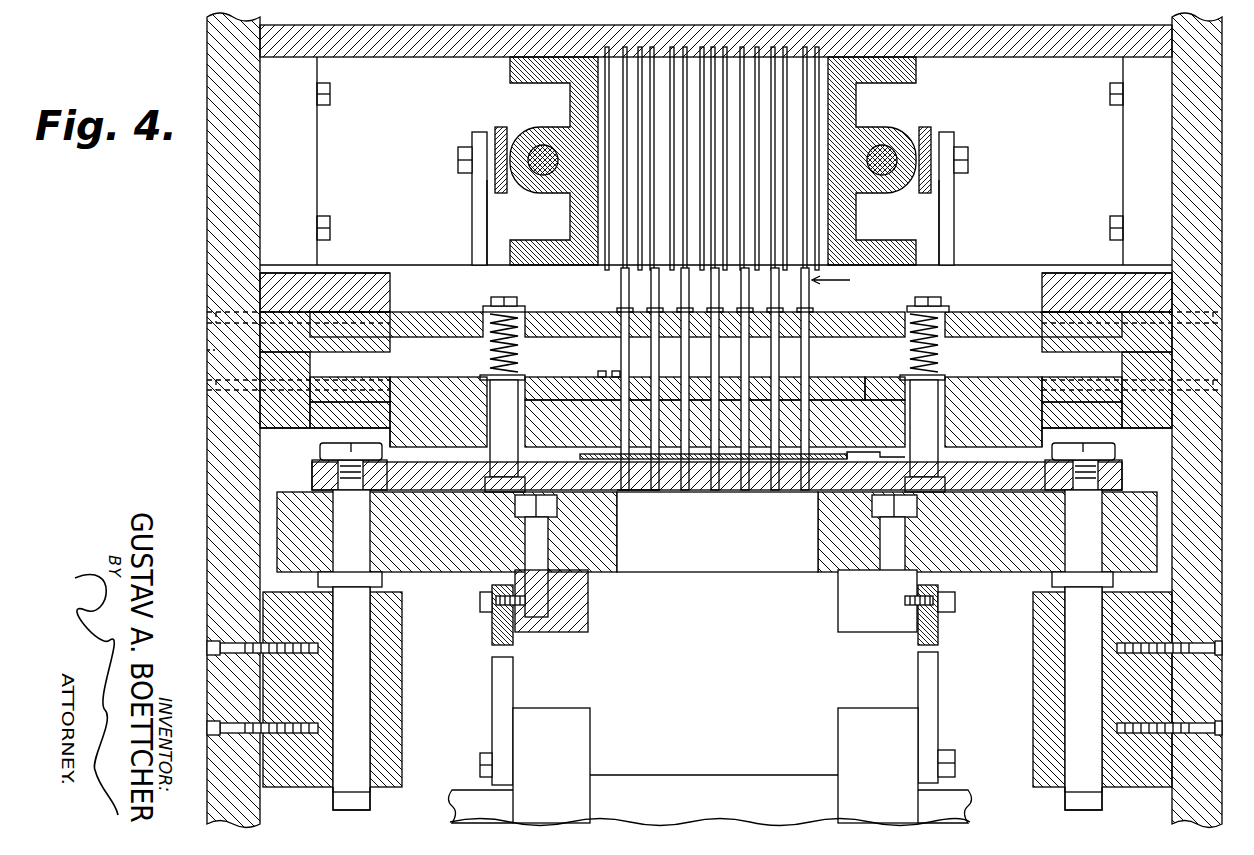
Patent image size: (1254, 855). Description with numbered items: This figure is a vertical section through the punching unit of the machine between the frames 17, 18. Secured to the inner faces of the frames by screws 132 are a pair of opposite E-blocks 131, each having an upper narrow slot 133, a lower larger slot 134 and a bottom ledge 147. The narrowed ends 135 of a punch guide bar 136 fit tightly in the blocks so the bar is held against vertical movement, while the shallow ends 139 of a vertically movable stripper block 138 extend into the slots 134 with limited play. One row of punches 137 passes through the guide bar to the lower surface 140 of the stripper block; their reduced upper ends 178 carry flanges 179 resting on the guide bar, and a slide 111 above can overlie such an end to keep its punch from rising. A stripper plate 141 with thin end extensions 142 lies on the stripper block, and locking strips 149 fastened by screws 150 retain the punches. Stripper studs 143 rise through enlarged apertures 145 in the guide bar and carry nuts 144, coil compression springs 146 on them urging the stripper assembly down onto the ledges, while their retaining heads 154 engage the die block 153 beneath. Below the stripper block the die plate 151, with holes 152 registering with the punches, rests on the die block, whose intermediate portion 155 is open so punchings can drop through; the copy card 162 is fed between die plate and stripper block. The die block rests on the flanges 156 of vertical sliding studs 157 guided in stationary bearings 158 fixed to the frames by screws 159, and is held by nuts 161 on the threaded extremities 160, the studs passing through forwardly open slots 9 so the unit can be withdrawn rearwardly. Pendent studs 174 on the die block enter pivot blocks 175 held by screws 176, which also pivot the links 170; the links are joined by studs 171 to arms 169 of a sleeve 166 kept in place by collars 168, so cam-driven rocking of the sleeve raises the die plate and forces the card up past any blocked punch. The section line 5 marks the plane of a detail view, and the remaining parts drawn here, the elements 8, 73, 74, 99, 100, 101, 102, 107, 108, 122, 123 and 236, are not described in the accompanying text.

The section line 5- 5 is at (808, 398).
The bolt 8 is at (458, 158).
The forwardly open slot 9 is at (360, 490).
The frame 17 is at (1172, 128).
The frame 18 is at (207, 262).
The pivot pin 73 is at (884, 147).
The pivot pin 74 is at (540, 178).
The partition wall 99 is at (1123, 160).
The partition wall 100 is at (318, 160).
The top plate 101 is at (410, 58).
The chamber 102 is at (420, 265).
The bearing block 107 is at (916, 77).
The bearing block 108 is at (510, 75).
The slide 111 is at (712, 169).
The plate 122 is at (472, 200).
The liner plate 123 is at (500, 127).
The E-block 131 is at (345, 273).
The screw 132 is at (207, 318).
The upper narrow side slot 133 is at (190, 355).
The lower vertically larger slot 134 is at (310, 357).
The narrowed end 135 is at (312, 310).
The punch guide bar 136 is at (442, 312).
The punch 137 is at (800, 352).
The stripper block 138 is at (422, 378).
The shallow end 139 is at (368, 378).
The lower surface 140 is at (818, 500).
The stripper plate 141 is at (870, 378).
The thin end extension 142 is at (488, 375).
The stripper stud 143 is at (714, 428).
The nut 144 is at (496, 298).
The aperture 145 is at (538, 294).
The coil compression spring 146 is at (518, 348).
The bottom ledge 147 is at (335, 428).
The locking strip 149 is at (600, 372).
The screw 150 is at (616, 371).
The die plate 151 is at (707, 490).
The hole 152 is at (640, 492).
The die block 153 is at (600, 572).
The retaining head 154 is at (715, 474).
The intermediate portion 155 is at (712, 572).
The flange 156 is at (382, 580).
The vertical sliding stud 157 is at (370, 800).
The stationary bearing 158 is at (402, 718).
The screw 159 is at (207, 648).
The threaded extremity 160 is at (338, 470).
The nut 161 is at (320, 452).
The copy card 162 is at (737, 470).
The sleeve 166 is at (708, 775).
The collar 168 is at (456, 795).
The arm 169 is at (590, 724).
The link 170 is at (513, 685).
The stud 171 is at (480, 756).
The pendent stud 174 is at (538, 620).
The pivot block 175 is at (588, 618).
The screw 176 is at (480, 610).
The reduced end 178 is at (621, 283).
The flange 179 is at (617, 308).
The screw 236 is at (330, 96).